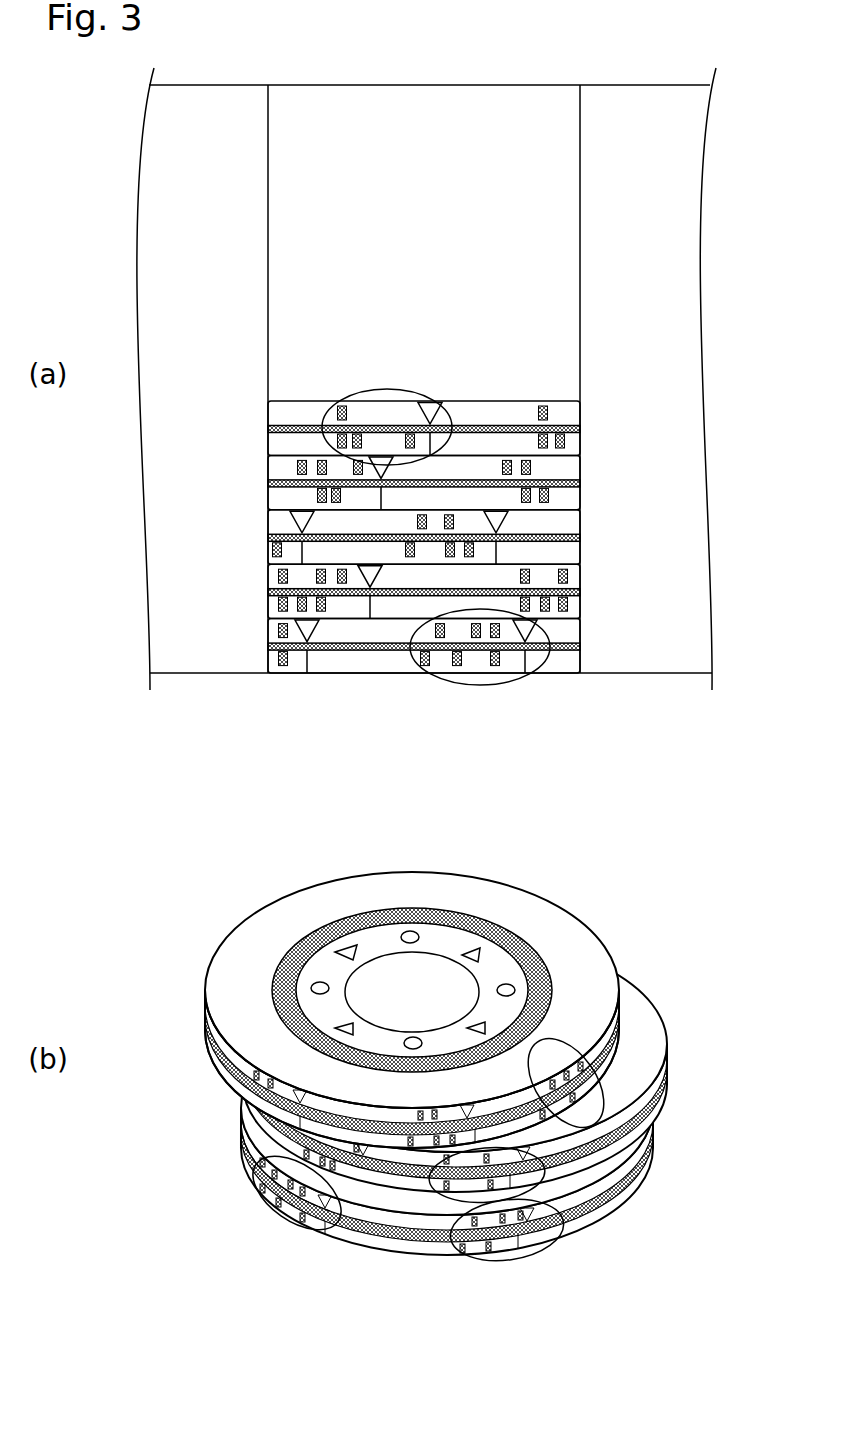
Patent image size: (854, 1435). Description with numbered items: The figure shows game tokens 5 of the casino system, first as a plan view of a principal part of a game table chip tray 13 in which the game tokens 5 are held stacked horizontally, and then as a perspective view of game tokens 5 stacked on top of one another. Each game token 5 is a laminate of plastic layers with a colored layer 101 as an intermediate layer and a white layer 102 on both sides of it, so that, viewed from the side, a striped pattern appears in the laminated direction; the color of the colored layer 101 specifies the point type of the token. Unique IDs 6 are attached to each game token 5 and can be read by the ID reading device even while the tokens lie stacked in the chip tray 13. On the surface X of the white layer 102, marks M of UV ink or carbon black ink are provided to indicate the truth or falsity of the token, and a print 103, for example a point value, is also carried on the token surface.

The game table chip tray 13 is at (680, 122).
The game token 5 is at (573, 401).
The unique ID 6 is at (383, 395).
The white layer 102 is at (207, 1013).
The colored layer 101 is at (242, 1157).
The print 103 is at (308, 932).
The surface of the white layer X is at (398, 887).
The mark M is at (470, 952).